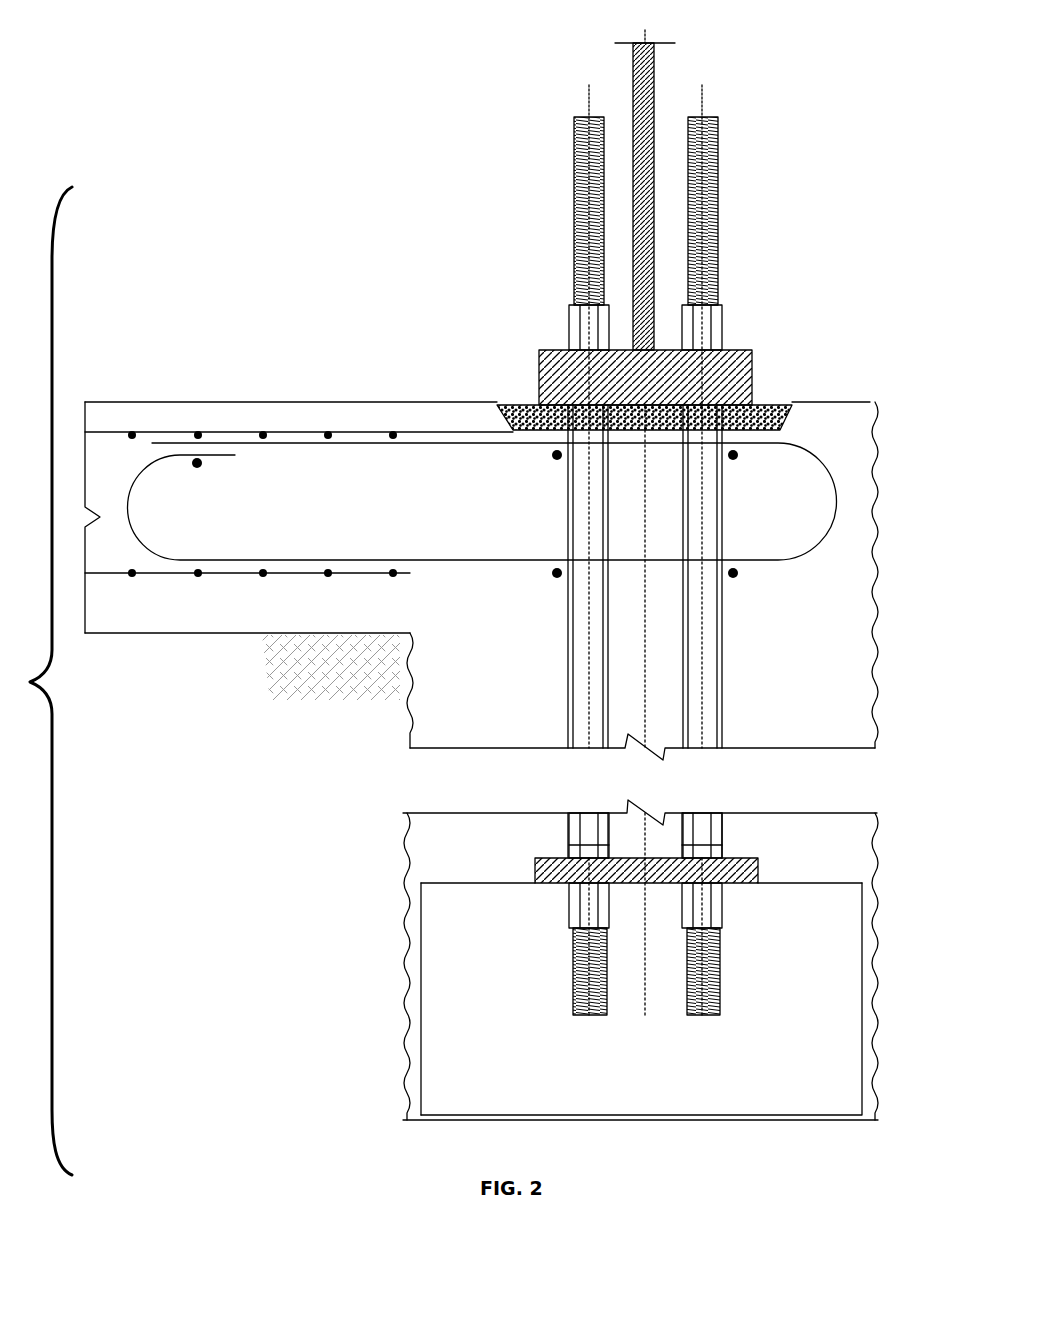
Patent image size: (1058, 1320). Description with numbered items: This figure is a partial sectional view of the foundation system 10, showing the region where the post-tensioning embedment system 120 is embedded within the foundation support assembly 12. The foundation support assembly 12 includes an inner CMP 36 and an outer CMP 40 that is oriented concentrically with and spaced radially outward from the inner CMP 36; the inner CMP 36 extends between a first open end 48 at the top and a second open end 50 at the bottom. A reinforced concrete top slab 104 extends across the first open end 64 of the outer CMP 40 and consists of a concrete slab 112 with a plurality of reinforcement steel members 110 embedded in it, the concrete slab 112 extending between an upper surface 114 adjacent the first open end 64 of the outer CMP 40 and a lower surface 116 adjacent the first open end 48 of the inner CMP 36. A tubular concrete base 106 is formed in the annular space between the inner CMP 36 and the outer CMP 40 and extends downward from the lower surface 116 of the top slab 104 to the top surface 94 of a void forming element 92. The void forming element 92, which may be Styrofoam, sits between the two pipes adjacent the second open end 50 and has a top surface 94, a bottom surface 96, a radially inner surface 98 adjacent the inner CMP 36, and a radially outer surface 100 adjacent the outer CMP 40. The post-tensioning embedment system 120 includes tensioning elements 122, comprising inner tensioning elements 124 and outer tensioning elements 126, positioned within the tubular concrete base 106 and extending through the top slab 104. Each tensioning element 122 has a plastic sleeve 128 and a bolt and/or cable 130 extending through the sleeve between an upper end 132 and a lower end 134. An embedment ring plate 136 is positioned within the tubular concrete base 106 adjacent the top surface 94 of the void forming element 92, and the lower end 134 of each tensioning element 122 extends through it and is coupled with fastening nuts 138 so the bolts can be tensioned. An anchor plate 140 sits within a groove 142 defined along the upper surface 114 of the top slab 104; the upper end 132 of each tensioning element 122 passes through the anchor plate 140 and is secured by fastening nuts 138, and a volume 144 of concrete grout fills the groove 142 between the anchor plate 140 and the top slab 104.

The foundation system 10 is at (245, 48).
The foundation support assembly 12 is at (250, 333).
The post-tensioning embedment system 120 is at (790, 65).
The reinforced concrete top slab 104 is at (816, 402).
The upper surface 114 is at (243, 400).
The concrete slab 112 is at (325, 400).
The reinforcement steel members 110 is at (400, 446).
The lower surface 116 is at (248, 638).
The first open end 48 is at (387, 650).
The outer CMP 40 is at (879, 540).
The tubular concrete base 106 is at (804, 705).
The first open end 64 is at (888, 408).
The upper end 132 is at (746, 270).
The tensioning elements 122 is at (656, 416).
The inner tensioning elements 124 is at (564, 180).
The outer tensioning elements 126 is at (720, 195).
The fastening nuts 138 is at (722, 325).
The anchor plate 140 is at (538, 357).
The groove 142 is at (763, 377).
The volume of concrete grout 144 is at (788, 420).
The plastic sleeve 128 is at (722, 652).
The inner CMP 36 is at (408, 882).
The void forming element 92 is at (840, 882).
The radially outer surface 100 is at (862, 967).
The second open end 50 is at (410, 1118).
The top surface 94 is at (500, 883).
The radially inner surface 98 is at (415, 962).
The bottom surface 96 is at (500, 1118).
The embedment ring plate 136 is at (740, 858).
The lower end 134 is at (742, 935).
The bolt and/or cable 130 is at (723, 998).